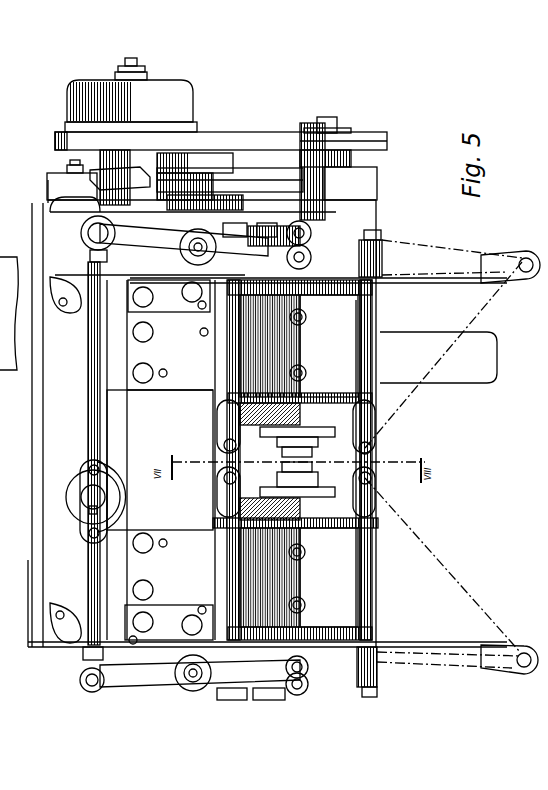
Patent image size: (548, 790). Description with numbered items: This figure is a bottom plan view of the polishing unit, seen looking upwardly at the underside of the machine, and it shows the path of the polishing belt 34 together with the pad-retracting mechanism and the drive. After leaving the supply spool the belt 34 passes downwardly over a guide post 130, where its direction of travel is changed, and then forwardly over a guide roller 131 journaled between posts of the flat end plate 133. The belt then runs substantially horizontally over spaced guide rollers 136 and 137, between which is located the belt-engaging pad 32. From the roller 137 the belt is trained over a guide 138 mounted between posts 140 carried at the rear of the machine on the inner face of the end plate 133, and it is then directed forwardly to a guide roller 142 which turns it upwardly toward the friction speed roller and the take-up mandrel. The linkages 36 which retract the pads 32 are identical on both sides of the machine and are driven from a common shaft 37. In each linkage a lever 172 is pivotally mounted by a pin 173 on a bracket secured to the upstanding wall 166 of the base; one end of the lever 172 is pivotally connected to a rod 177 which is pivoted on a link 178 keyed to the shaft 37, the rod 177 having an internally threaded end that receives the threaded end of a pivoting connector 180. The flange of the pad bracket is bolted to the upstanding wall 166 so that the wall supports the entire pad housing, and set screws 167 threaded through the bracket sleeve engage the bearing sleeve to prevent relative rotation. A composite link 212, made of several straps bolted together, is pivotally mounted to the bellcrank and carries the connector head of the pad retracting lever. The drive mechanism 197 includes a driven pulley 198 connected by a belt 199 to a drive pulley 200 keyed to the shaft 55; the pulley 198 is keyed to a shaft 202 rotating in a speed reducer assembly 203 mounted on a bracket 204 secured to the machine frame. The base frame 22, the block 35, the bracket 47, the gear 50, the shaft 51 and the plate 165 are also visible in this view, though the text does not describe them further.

The frame 22 is at (32, 585).
The pad 32 is at (300, 452).
The belt 34 is at (452, 457).
The block 35 is at (258, 701).
The linkage 36 is at (216, 247).
The shaft 37 is at (88, 500).
The bracket 47 is at (453, 376).
The gear 50 is at (267, 167).
The shaft 51 is at (253, 179).
The shaft 55 is at (331, 118).
The guide post 130 is at (377, 685).
The guide roller 131 is at (526, 674).
The end plate 133 is at (157, 645).
The guide roller 136 is at (370, 482).
The guide roller 137 is at (228, 478).
The guide 138 is at (62, 620).
The posts 140 is at (326, 342).
The guide roller 142 is at (213, 610).
The plate 165 is at (133, 352).
The upstanding wall 166 is at (133, 455).
The set screws 167 is at (303, 323).
The lever 172 is at (199, 461).
The pin 173 is at (190, 706).
The rod 177 is at (104, 430).
The link 178 is at (92, 465).
The pivoting connector 180 is at (84, 242).
The drive mechanism 197 is at (55, 132).
The pulley 198 is at (198, 128).
The belt 199 is at (233, 137).
The drive pulley 200 is at (368, 133).
The shaft 202 is at (128, 58).
The speed reducer assembly 203 is at (97, 84).
The bracket 204 is at (62, 183).
The composite link 212 is at (307, 251).